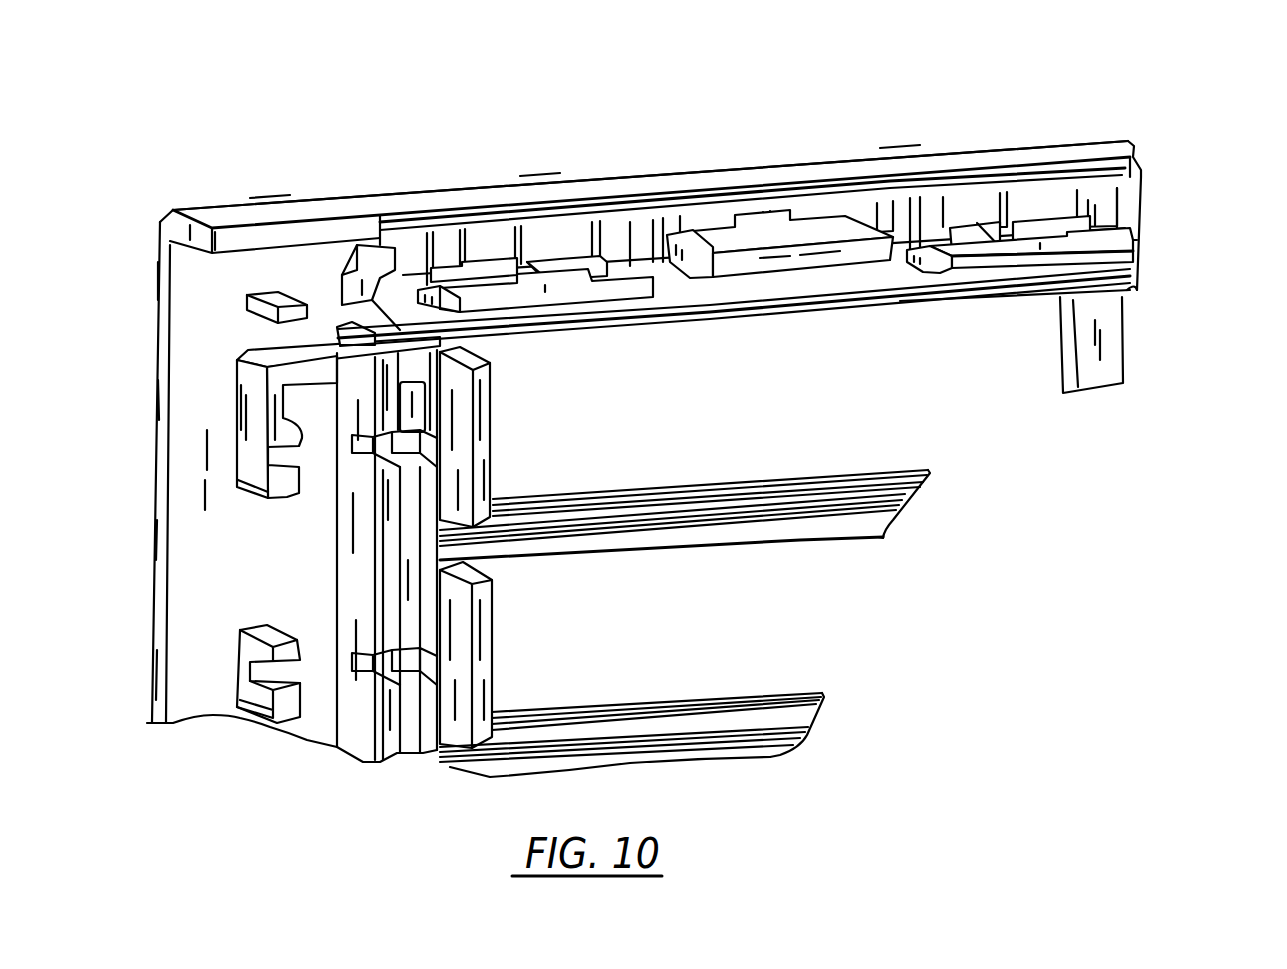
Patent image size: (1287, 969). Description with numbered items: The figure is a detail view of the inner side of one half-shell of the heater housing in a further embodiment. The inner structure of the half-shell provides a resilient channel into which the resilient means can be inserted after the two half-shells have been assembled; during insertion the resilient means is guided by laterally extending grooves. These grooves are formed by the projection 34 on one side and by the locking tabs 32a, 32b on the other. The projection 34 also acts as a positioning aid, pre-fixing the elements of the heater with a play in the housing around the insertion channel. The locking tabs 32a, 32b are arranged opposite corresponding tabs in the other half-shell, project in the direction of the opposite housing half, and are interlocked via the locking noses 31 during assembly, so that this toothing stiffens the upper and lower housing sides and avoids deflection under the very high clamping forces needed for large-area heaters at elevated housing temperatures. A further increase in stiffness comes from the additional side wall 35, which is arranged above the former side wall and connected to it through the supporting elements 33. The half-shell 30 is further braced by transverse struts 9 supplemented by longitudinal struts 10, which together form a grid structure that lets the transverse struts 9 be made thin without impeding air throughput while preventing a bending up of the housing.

The transverse struts 9 is at (1097, 343).
The longitudinal struts 10 is at (755, 503).
The housing panel 30 is at (327, 303).
The locking noses 31 is at (560, 273).
The locking tab 32a is at (782, 237).
The locking tab 32b is at (1135, 243).
The supporting elements 33 is at (900, 190).
The projection 34 is at (668, 312).
The additional side wall 35 is at (320, 230).